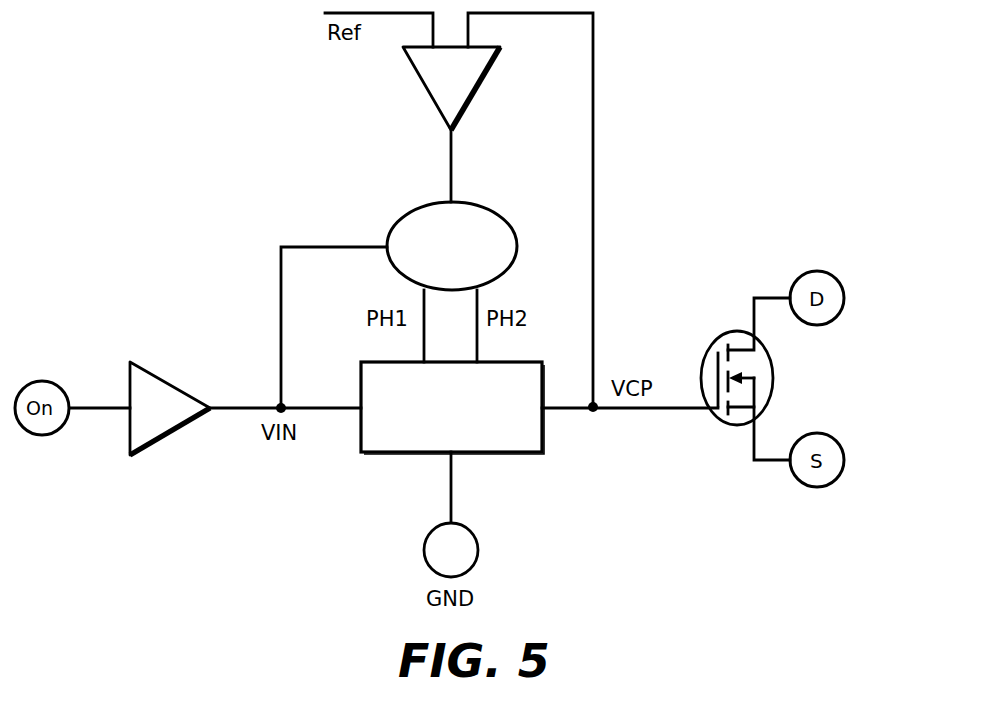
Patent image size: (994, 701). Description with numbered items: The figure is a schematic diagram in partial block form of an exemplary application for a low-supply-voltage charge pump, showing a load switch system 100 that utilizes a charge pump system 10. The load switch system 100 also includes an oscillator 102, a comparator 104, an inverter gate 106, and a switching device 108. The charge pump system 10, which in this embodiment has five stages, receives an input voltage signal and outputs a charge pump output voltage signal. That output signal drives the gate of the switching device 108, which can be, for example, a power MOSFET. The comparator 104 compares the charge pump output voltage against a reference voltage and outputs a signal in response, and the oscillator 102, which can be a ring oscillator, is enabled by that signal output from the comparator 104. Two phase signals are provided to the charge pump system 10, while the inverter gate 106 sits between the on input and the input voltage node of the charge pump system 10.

The load switch system 100 is at (656, 54).
The charge pump system 10 is at (360, 442).
The oscillator 102 is at (428, 203).
The comparator 104 is at (420, 84).
The inverter gate 106 is at (148, 367).
The switching device 108 is at (733, 332).